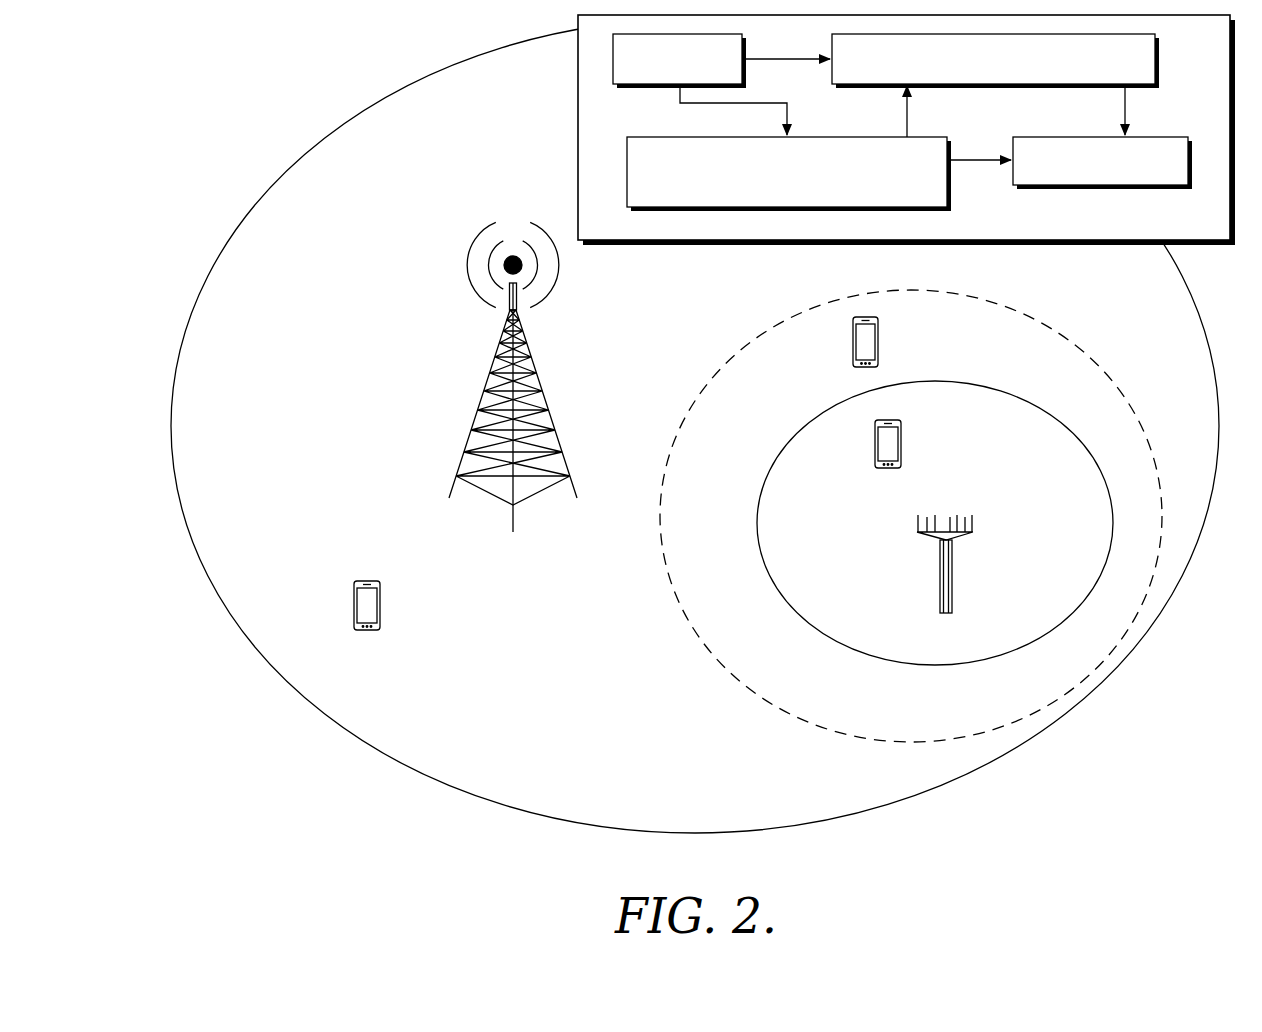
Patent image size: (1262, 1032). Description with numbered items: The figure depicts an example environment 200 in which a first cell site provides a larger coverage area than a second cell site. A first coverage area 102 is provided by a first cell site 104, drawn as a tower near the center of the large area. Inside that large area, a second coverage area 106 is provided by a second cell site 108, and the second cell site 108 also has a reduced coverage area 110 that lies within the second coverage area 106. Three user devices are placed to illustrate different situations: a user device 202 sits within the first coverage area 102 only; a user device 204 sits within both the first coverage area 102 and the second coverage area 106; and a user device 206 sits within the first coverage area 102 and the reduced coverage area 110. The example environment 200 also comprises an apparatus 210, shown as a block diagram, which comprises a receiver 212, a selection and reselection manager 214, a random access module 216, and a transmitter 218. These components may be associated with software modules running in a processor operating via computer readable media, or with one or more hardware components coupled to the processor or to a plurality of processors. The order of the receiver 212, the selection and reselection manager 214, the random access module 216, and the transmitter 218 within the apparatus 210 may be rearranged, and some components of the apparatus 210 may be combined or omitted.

The example environment 200 is at (138, 81).
The first coverage area 102 is at (318, 316).
The first cell site 104 is at (483, 403).
The second coverage area 106 is at (941, 709).
The second cell site 108 is at (940, 577).
The reduced coverage area 110 is at (1075, 541).
The user device 202 is at (380, 603).
The user device 204 is at (878, 342).
The user device 206 is at (901, 443).
The apparatus 210 is at (578, 100).
The receiver 212 is at (620, 84).
The selection and reselection manager 214 is at (947, 207).
The random access module 216 is at (1155, 60).
The transmitter 218 is at (1120, 185).